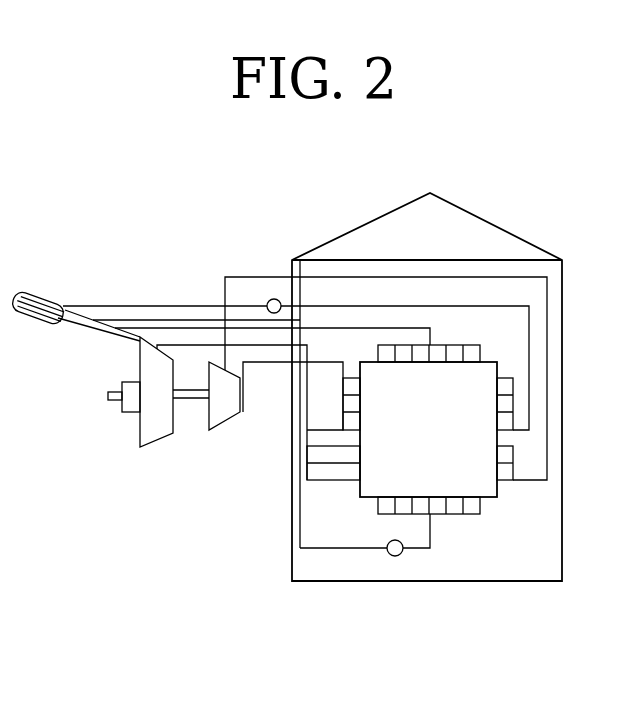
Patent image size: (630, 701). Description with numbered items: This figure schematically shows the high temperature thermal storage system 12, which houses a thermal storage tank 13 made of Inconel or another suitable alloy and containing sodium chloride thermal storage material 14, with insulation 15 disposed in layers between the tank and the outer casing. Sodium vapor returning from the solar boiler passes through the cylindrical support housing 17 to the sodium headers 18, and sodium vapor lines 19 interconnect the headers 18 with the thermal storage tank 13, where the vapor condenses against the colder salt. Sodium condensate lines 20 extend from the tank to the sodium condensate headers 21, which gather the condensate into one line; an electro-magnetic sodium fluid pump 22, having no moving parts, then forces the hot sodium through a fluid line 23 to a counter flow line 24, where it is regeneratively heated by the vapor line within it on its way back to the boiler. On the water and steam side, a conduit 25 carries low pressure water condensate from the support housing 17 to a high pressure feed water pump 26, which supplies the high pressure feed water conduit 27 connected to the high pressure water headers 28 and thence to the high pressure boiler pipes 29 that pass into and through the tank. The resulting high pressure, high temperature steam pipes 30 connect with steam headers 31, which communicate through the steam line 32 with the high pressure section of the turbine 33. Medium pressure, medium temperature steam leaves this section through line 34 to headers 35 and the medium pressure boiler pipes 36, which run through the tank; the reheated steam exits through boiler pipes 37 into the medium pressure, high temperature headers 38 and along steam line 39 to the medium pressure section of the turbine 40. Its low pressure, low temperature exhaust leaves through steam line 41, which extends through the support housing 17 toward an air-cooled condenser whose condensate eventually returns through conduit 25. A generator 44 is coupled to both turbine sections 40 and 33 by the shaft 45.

The high temperature thermal storage system 12 is at (455, 203).
The thermal storage tank 13 is at (500, 360).
The sodium chloride thermal storage material 14 is at (427, 467).
The insulation 15 is at (548, 557).
The cylindrical support housing 17 is at (38, 293).
The sodium headers 18 is at (465, 343).
The sodium vapor lines 19 is at (376, 349).
The sodium condensate lines 20 is at (484, 507).
The sodium condensate headers 21 is at (453, 520).
The electro-magnetic sodium fluid pump 22 is at (397, 557).
The fluid line 23 is at (320, 548).
The counter flow line 24 is at (303, 322).
The conduit 25 is at (162, 304).
The high pressure feed water pump 26 is at (271, 297).
The high pressure feed water conduit 27 is at (443, 303).
The high pressure water headers 28 is at (518, 434).
The high pressure boiler pipes 29 is at (516, 408).
The high pressure, high temperature steam pipes 30 is at (352, 412).
The high pressure, high temperature steam headers 31 is at (341, 401).
The high pressure, high temperature steam line 32 is at (318, 356).
The high pressure section of the turbine 33 is at (217, 422).
The medium pressure, medium temperature steam line 34 is at (380, 272).
The medium pressure, medium temperature headers 35 is at (520, 483).
The medium pressure, medium temperature boiler pipes 36 is at (495, 457).
The high temperature, medium pressure boiler pipes 37 is at (328, 484).
The medium pressure, high temperature headers 38 is at (297, 486).
The high temperature, medium pressure steam line 39 is at (305, 430).
The medium pressure section of the turbine 40 is at (152, 427).
The low pressure, low temperature turbine exhaust steam line 41 is at (95, 335).
The generator 44 is at (112, 408).
The shaft 45 is at (190, 386).